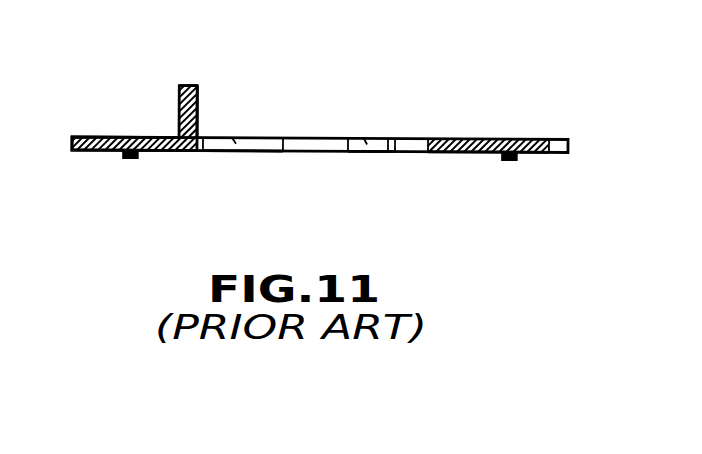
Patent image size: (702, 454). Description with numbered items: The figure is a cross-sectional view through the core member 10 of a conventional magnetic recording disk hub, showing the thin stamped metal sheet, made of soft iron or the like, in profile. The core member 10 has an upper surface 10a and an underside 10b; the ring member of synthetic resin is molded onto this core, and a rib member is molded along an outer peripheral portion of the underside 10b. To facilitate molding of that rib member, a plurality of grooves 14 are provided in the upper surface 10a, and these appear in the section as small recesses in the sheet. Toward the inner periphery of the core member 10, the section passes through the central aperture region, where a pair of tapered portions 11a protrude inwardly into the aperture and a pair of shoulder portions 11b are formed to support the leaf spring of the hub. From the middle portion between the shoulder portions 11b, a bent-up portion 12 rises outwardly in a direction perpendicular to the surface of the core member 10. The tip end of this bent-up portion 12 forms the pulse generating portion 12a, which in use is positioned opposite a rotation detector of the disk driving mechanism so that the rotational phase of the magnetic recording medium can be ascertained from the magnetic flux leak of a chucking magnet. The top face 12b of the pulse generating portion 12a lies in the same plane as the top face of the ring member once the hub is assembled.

The core member 10 is at (83, 155).
The upper surface 10a is at (452, 138).
The underside 10b is at (470, 154).
The tapered portion 11a is at (365, 153).
The shoulder portion 11b is at (239, 153).
The bent-up portion 12 is at (178, 125).
The pulse generating portion 12a is at (197, 98).
The top face 12b is at (186, 84).
The groove 14 is at (130, 137).